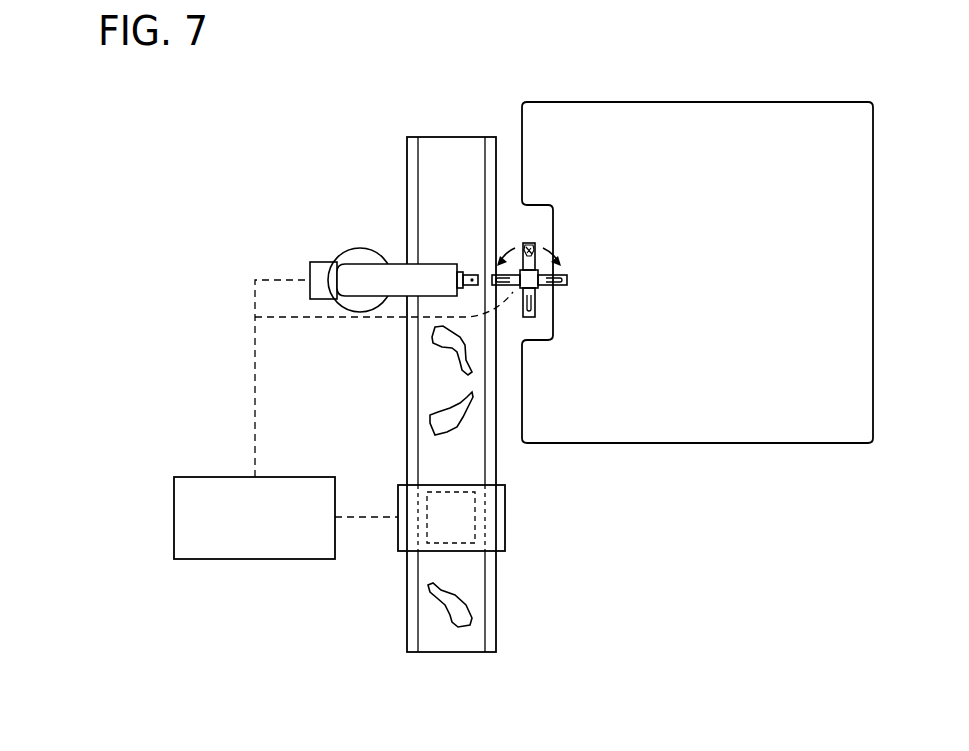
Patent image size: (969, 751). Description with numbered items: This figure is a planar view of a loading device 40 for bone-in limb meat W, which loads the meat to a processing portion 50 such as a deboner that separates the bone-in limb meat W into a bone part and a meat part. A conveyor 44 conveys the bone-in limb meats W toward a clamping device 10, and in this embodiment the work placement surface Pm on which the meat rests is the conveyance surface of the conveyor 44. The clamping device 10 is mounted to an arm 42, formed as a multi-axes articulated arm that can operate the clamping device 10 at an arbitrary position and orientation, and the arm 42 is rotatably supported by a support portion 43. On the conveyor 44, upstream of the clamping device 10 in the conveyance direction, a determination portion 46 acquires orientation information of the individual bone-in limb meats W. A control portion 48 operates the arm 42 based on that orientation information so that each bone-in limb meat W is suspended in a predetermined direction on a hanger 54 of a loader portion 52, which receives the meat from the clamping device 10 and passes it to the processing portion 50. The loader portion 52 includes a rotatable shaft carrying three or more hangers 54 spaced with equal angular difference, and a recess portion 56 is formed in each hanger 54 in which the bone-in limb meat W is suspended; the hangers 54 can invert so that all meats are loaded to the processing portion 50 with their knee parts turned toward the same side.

The clamping device 10 is at (468, 270).
The loading device 40 is at (310, 139).
The arm 42 is at (397, 273).
The support portion 43 is at (350, 257).
The conveyor 44 is at (497, 605).
The determination portion 46 is at (506, 503).
The control portion 48 is at (225, 477).
The processing portion 50 is at (543, 102).
The loader portion 52 is at (572, 298).
The hanger 54 is at (535, 297).
The recess portion 56 is at (528, 318).
The bone-in limb meat W is at (528, 246).
The work placement surface Pm is at (430, 388).